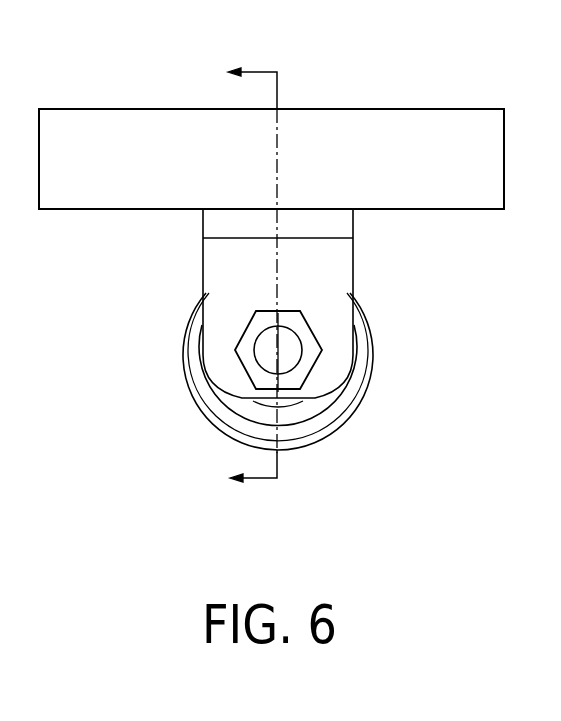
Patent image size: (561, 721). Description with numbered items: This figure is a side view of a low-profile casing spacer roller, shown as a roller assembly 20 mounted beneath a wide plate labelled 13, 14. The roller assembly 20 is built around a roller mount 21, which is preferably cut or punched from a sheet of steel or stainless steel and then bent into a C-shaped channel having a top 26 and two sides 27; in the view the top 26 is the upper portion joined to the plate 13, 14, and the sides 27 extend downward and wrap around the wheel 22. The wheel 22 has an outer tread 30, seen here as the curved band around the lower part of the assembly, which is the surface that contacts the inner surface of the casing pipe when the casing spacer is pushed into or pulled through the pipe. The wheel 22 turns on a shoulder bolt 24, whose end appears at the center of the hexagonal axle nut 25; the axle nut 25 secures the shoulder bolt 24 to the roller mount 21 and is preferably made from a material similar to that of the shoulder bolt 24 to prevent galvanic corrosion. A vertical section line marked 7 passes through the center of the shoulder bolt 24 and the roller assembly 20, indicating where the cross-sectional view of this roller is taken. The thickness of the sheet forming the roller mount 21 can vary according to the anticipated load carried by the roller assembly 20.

The section line 7- 7 is at (242, 274).
The mounting plate 13 is at (436, 109).
The mounting plate 14 is at (271, 159).
The roller assembly 20 is at (390, 420).
The roller mount 21 is at (335, 279).
The wheel 22 is at (210, 404).
The shoulder bolt 24 is at (285, 340).
The axle nut 25 is at (245, 328).
The top 26 is at (228, 224).
The sides 27 is at (345, 331).
The outer tread 30 is at (373, 345).